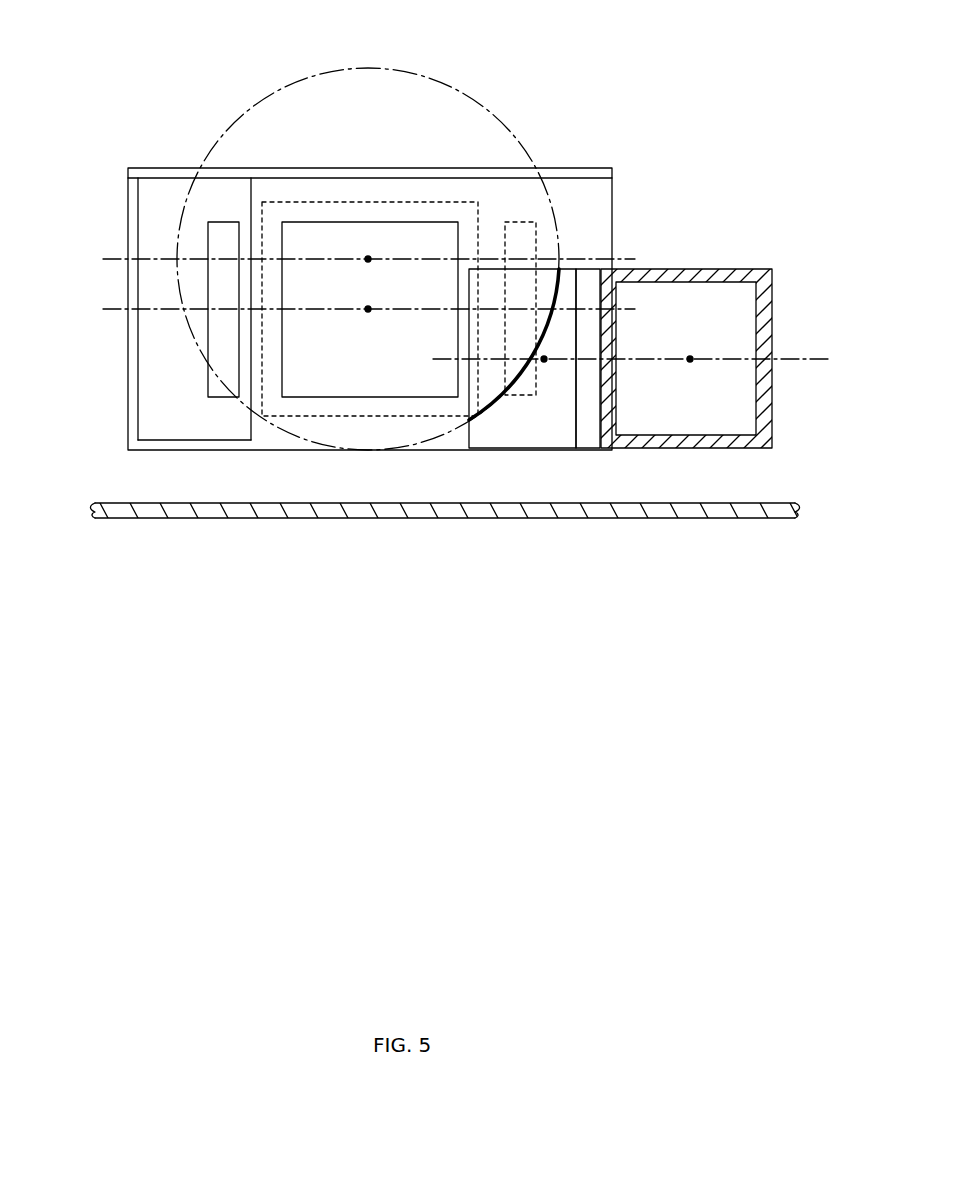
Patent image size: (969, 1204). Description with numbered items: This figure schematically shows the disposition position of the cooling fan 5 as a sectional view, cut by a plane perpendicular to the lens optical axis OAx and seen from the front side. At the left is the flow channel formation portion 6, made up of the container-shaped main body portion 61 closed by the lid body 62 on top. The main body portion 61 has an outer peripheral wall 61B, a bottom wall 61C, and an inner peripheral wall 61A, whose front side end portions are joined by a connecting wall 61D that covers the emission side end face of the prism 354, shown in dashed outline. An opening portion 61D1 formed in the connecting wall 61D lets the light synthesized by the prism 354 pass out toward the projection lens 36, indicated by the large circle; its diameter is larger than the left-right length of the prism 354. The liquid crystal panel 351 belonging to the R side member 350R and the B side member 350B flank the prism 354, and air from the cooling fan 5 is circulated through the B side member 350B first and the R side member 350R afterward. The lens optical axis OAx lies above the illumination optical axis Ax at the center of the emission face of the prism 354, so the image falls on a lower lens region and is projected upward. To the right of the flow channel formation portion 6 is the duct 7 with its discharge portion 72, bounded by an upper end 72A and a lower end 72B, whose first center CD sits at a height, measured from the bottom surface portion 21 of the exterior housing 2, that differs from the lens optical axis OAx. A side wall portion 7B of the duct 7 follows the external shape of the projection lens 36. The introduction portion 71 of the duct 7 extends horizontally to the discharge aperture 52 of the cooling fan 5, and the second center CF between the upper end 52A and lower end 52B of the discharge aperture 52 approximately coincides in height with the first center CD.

The projection lens 36 is at (380, 66).
The prism 354 is at (437, 202).
The liquid crystal panel 351 is at (350, 246).
The R side member 350R is at (208, 230).
The B side member 350B is at (515, 222).
The flow channel formation portion 6 is at (698, 127).
The lid body 62 is at (613, 170).
The main body portion 61 is at (613, 200).
The inner peripheral wall 61A is at (252, 193).
The outer peripheral wall 61B is at (128, 215).
The bottom wall 61C is at (187, 450).
The connecting wall 61D is at (300, 188).
The opening portion 61D1 is at (354, 231).
The duct 7 is at (533, 393).
The discharge portion 72 is at (533, 393).
The upper end 72A is at (547, 269).
The lower end 72B is at (547, 449).
The side wall portion 7B is at (520, 373).
The introduction portion 71 is at (588, 438).
The cooling fan 5 is at (680, 363).
The discharge aperture 52 is at (774, 308).
The upper end 52A is at (730, 269).
The lower end 52B is at (700, 449).
The exterior housing 2 is at (444, 544).
The bottom surface portion 21 is at (540, 519).
The lens optical axis OAx is at (372, 257).
The illumination optical axis Ax is at (372, 307).
The first center CD is at (545, 362).
The second center CF is at (691, 362).